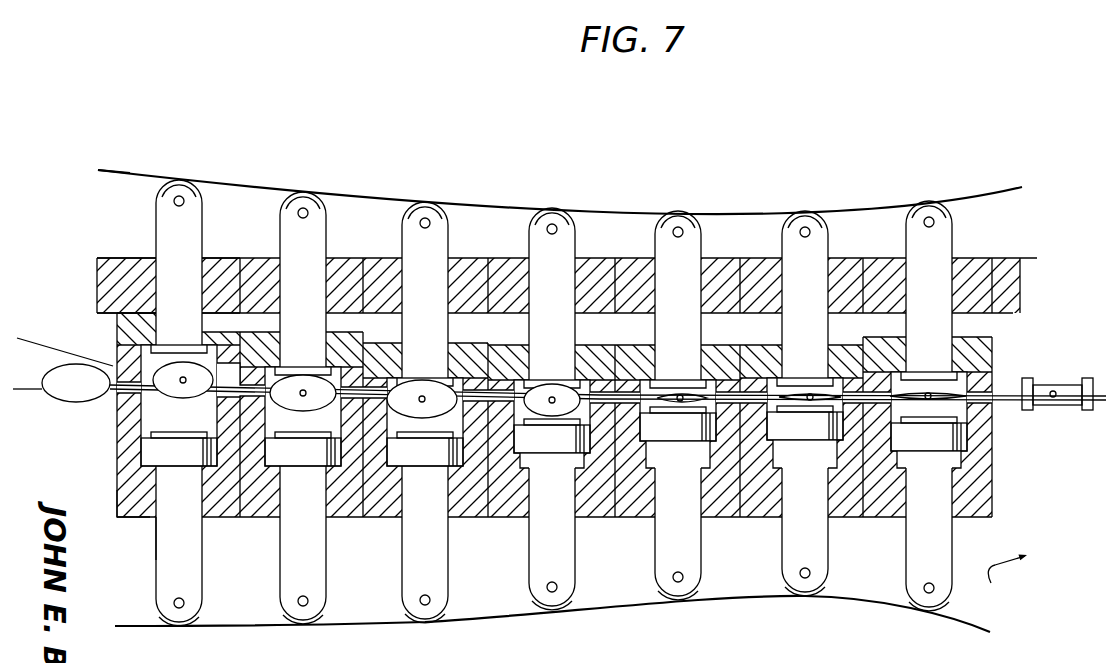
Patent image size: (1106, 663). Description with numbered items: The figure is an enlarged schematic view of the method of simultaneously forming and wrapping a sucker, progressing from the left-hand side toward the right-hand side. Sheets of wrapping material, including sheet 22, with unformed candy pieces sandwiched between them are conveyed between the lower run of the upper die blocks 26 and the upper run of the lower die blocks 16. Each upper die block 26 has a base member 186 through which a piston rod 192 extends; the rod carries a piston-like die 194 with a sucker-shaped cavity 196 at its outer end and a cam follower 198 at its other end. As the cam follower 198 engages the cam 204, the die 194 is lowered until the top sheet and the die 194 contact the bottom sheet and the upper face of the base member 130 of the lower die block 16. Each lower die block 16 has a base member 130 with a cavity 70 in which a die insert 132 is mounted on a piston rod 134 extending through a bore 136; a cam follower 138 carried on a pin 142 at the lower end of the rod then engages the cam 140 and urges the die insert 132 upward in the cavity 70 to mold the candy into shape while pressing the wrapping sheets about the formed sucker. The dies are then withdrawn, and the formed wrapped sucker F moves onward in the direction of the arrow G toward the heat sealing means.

The cam follower 198 is at (210, 178).
The cam 204 is at (116, 180).
The base member 186 is at (128, 258).
The piston rod 192 is at (203, 223).
The upper die block 26 is at (95, 272).
The sheet 22 is at (14, 337).
The piston-like die 194 is at (117, 322).
The cavity 196 is at (117, 366).
The cavity 70 is at (153, 413).
The base member 130 is at (117, 447).
The die insert 132 is at (147, 458).
The die block 16 is at (112, 495).
The bore 136 is at (167, 500).
The piston rod 134 is at (207, 538).
The pin 142 is at (186, 600).
The cam follower 138 is at (200, 616).
The cam 140 is at (357, 620).
The formed wrapped sucker F is at (1040, 378).
The arrow G is at (1007, 577).